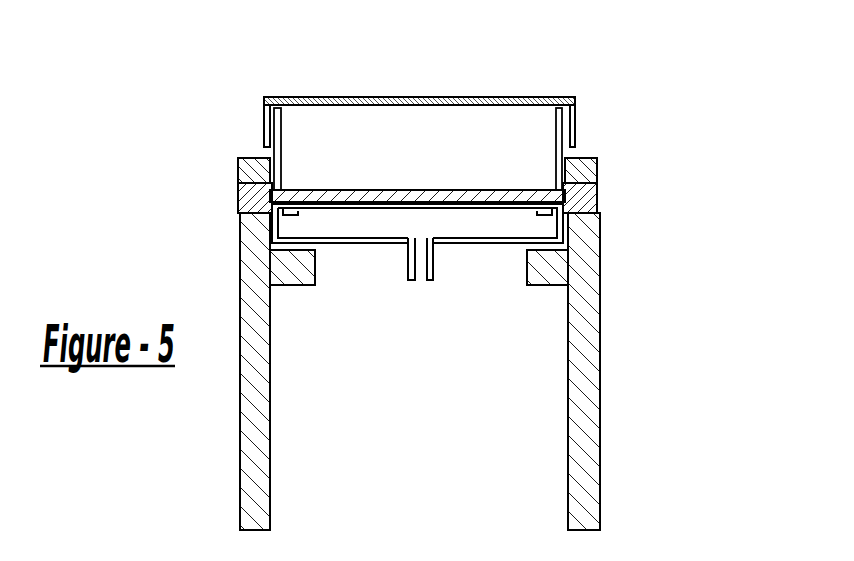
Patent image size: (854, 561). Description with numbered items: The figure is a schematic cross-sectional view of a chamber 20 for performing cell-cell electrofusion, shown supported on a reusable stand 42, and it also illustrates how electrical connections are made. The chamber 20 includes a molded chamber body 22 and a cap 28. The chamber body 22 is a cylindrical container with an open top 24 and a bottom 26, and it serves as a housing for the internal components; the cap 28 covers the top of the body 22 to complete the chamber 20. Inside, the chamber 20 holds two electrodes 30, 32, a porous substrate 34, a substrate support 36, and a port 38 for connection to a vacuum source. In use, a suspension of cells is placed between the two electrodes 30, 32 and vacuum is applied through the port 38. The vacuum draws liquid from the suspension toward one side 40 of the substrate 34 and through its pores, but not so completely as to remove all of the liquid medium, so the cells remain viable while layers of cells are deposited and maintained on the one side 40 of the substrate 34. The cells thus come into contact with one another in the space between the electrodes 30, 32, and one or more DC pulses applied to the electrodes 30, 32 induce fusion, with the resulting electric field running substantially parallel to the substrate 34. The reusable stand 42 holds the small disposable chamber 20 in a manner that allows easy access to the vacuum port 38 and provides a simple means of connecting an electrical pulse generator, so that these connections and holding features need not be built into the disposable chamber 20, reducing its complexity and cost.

The chamber 20 is at (430, 212).
The chamber body 22 is at (573, 147).
The open top 24 is at (525, 116).
The bottom 26 is at (558, 250).
The cap 28 is at (263, 123).
The electrode 30 is at (417, 162).
The electrode 32 is at (417, 164).
The porous substrate 34 is at (417, 285).
The substrate support 36 is at (292, 216).
The port 38 is at (435, 263).
The one side of the substrate 40 is at (515, 195).
The reusable stand 42 is at (583, 343).